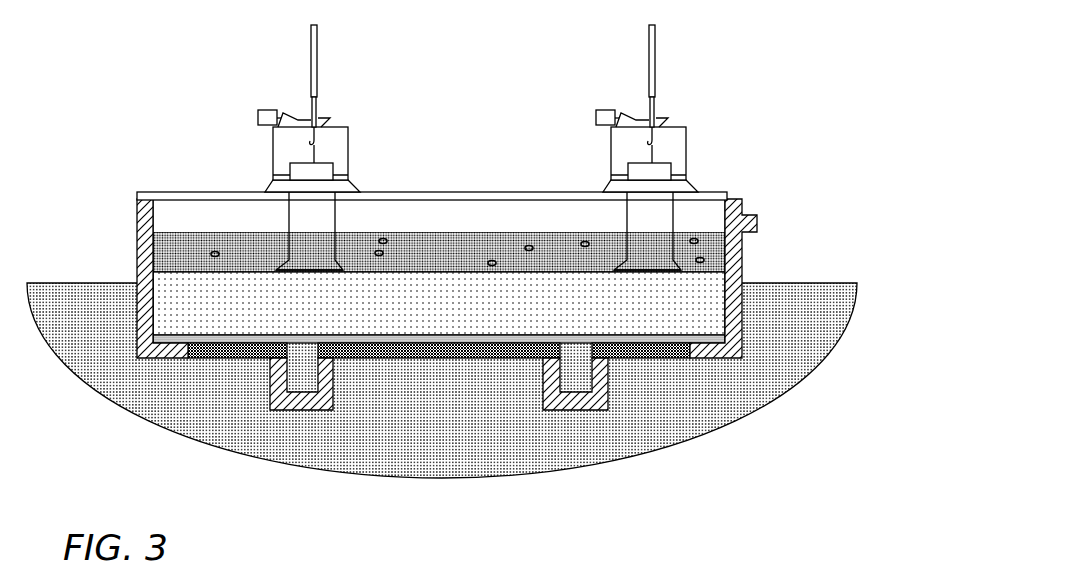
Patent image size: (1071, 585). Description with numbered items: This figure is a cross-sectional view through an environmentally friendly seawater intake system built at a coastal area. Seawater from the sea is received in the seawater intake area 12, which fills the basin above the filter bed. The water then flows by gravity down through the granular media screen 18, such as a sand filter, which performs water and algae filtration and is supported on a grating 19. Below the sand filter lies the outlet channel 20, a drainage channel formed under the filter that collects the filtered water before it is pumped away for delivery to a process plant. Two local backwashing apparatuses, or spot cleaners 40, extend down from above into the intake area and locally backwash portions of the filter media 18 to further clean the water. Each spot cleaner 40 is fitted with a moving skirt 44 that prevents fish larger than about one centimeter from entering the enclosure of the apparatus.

The seawater intake area 12 is at (440, 240).
The granular media screen 18 is at (180, 268).
The grating 19 is at (703, 343).
The outlet channel 20 is at (302, 382).
The spot cleaner 40 is at (288, 220).
The moving skirt 44 is at (283, 267).